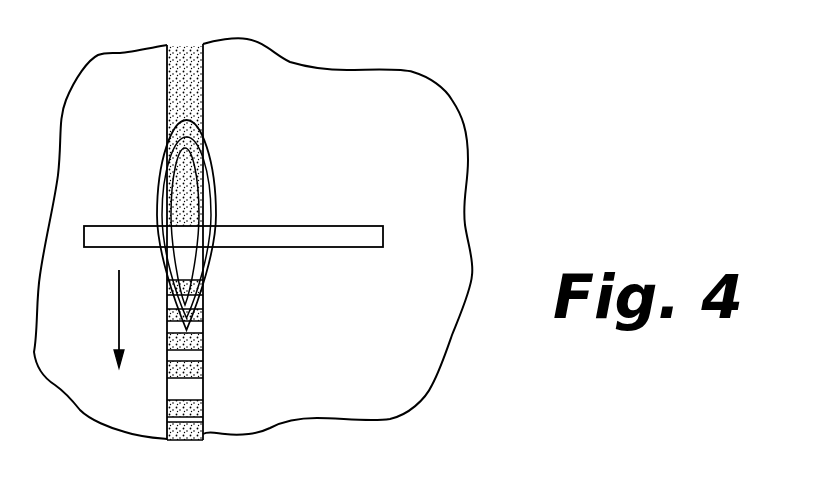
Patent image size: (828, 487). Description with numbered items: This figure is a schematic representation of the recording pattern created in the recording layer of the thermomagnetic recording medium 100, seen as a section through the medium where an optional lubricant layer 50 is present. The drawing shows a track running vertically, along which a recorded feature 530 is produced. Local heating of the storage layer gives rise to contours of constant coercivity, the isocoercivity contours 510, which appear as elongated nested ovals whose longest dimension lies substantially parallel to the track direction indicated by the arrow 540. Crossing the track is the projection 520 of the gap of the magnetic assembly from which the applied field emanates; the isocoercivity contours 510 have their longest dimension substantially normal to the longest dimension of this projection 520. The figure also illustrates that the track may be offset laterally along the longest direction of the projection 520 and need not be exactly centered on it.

The thermomagnetic recording medium 100 is at (294, 238).
The lubricant layer 50 is at (443, 160).
The isocoercivity contours 510 is at (213, 192).
The projection of the gap of the magnetic assembly 520 is at (328, 247).
The recorded feature 530 is at (205, 355).
The arrow indicating track direction 540 is at (119, 290).